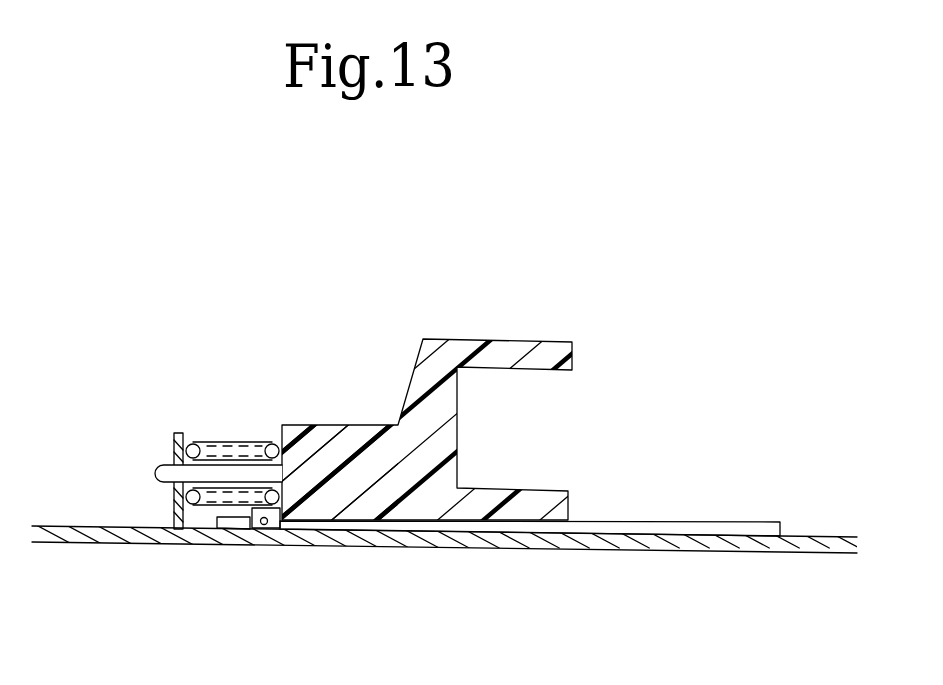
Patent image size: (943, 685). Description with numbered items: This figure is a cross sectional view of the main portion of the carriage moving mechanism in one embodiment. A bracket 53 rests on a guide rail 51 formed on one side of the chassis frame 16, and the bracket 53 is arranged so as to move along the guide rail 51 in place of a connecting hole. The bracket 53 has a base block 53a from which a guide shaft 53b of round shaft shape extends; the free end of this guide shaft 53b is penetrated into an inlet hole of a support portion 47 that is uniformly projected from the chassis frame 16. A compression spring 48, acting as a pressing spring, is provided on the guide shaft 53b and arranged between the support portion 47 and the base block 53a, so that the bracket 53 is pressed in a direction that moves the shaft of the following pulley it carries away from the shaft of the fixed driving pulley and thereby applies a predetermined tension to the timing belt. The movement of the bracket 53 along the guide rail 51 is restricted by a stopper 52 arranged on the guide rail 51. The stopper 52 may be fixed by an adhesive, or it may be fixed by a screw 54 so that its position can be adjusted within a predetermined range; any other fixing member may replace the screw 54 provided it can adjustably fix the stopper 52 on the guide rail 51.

The chassis frame 16 is at (64, 543).
The support portion 47 is at (175, 433).
The compression spring 48 is at (207, 438).
The guide rail 51 is at (743, 522).
The stopper 52 is at (255, 528).
The bracket 53 is at (455, 330).
The base block of bracket 53a is at (327, 432).
The guide shaft of bracket 53b is at (155, 471).
The screw 54 is at (270, 528).